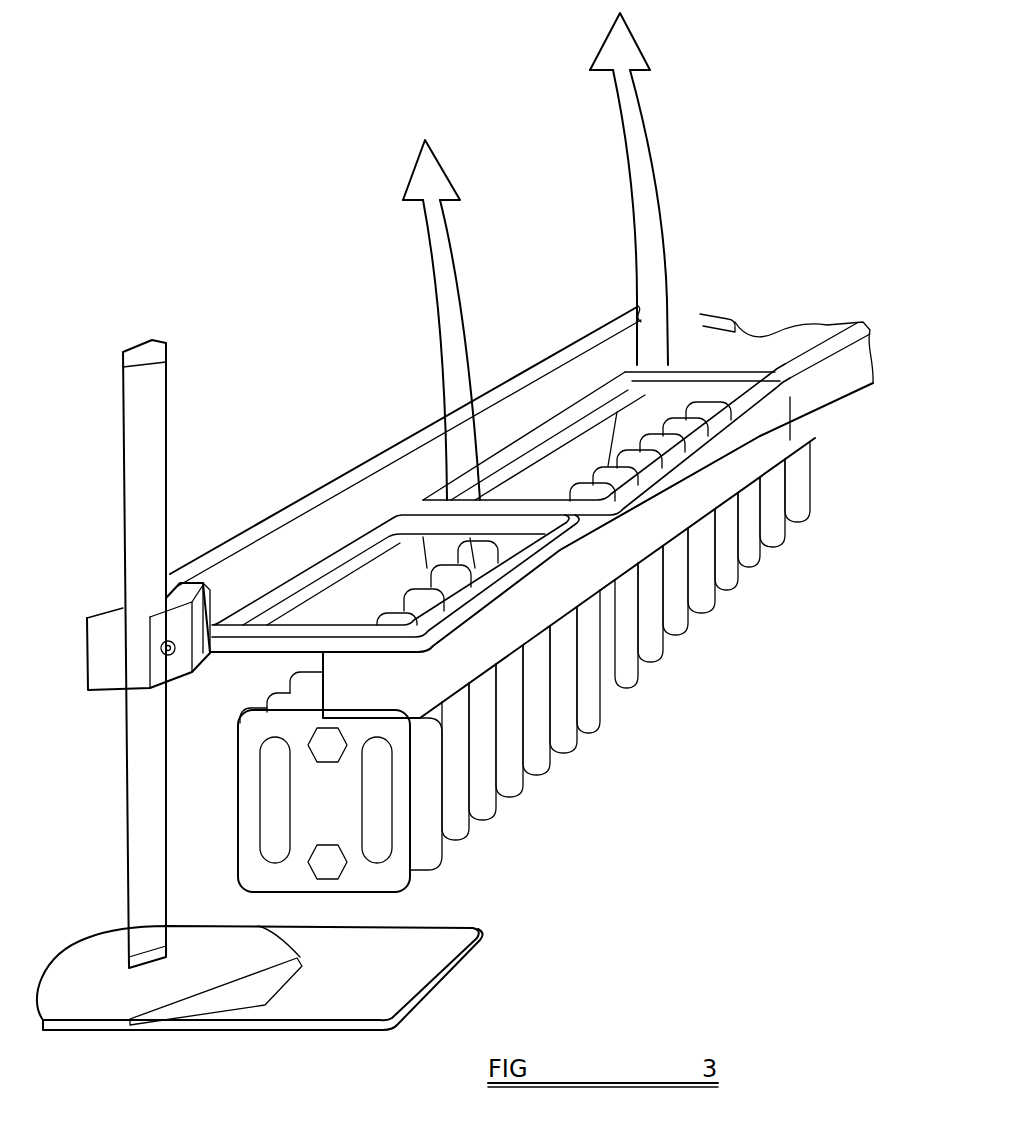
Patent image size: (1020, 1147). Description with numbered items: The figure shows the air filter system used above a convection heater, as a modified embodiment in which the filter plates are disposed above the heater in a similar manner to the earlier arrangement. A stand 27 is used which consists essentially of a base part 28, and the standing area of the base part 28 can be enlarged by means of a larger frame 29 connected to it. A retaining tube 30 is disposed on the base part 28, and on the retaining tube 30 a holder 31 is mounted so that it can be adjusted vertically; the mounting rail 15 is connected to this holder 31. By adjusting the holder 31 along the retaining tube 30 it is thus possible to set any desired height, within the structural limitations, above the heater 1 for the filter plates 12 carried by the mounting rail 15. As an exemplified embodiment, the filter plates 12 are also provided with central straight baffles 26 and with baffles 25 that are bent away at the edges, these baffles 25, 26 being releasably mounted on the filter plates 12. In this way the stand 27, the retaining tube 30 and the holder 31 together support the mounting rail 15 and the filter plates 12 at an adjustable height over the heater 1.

The heater 1 is at (493, 820).
The filter plates 12 is at (605, 703).
The mounting rail 15 is at (378, 476).
The baffles bent away at the edges 25 is at (534, 770).
The central straight baffles 26 is at (675, 512).
The stand 27 is at (236, 497).
The base part 28 is at (289, 963).
The larger frame 29 is at (464, 968).
The retaining tube 30 is at (155, 875).
The holder 31 is at (116, 607).